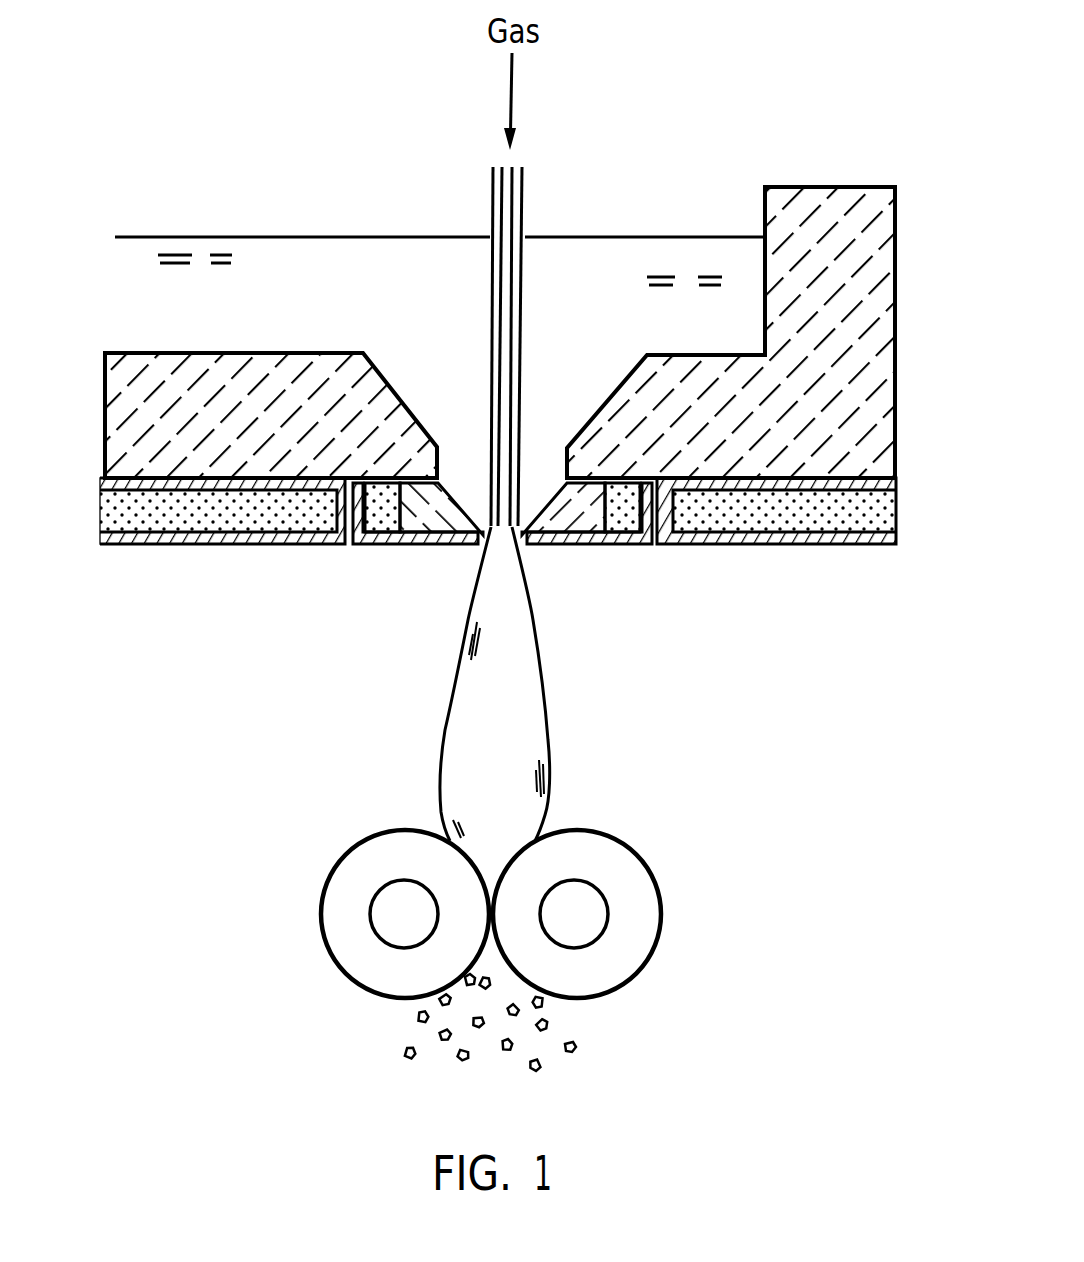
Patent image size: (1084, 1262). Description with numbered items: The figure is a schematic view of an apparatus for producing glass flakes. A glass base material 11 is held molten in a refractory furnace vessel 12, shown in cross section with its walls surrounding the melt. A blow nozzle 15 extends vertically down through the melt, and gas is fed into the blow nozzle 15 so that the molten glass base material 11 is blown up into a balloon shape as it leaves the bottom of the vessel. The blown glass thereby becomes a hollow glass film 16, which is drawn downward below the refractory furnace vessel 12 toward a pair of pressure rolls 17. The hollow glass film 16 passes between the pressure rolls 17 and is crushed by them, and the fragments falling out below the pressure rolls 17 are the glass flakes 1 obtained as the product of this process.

The glass flakes 1 is at (580, 1050).
The glass base material 11 is at (293, 258).
The refractory furnace vessel 12 is at (845, 205).
The blow nozzle 15 is at (523, 195).
The hollow glass film 16 is at (533, 742).
The pressure rolls 17 is at (633, 913).